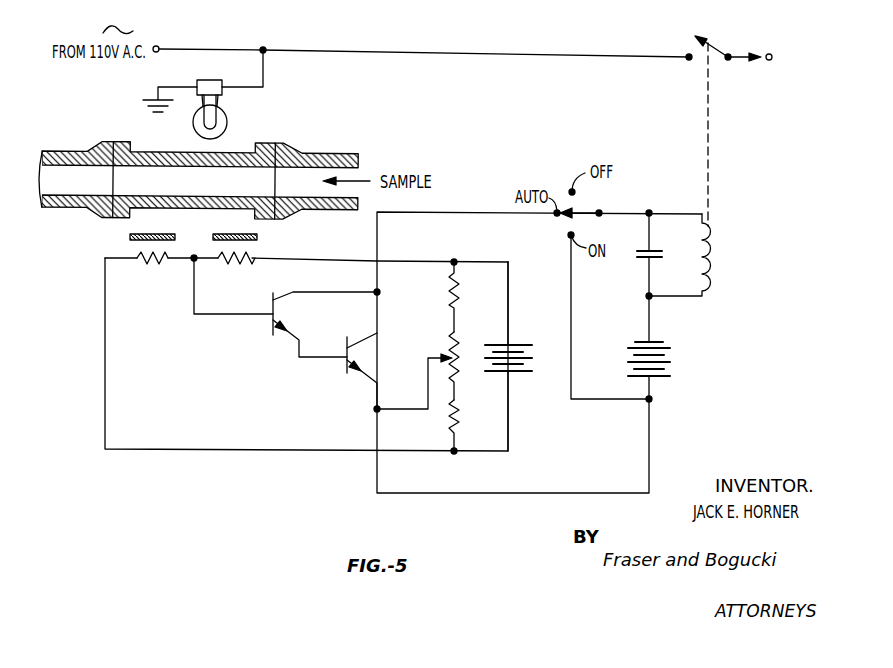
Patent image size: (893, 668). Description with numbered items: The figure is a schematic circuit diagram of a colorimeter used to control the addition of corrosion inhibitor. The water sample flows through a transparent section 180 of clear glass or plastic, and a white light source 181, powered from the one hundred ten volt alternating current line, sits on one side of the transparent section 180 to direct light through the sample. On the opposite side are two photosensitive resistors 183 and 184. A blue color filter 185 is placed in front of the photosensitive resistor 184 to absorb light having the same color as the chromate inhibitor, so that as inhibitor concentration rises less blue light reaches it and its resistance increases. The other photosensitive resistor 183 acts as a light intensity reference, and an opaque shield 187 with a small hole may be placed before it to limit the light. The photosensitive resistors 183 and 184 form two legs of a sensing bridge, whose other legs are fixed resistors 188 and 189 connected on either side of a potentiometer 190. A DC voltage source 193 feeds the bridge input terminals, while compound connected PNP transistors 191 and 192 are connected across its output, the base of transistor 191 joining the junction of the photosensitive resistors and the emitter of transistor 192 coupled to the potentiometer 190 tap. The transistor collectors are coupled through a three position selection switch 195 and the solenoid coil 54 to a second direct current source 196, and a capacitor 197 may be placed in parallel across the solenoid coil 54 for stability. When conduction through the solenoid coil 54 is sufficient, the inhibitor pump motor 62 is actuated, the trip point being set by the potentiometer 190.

The solenoid coil 54 is at (716, 250).
The inhibitor pump motor 62 is at (766, 85).
The transparent section 180 is at (243, 151).
The white light source 181 is at (224, 113).
The photosensitive resistor 183 is at (140, 266).
The photosensitive resistor 184 is at (237, 266).
The color filter 185 is at (258, 238).
The opaque shield 187 is at (130, 238).
The fixed resistor 188 is at (450, 293).
The fixed resistor 189 is at (457, 414).
The potentiometer 190 is at (450, 339).
The PNP transistor 191 is at (266, 328).
The PNP transistor 192 is at (343, 366).
The DC voltage source 193 is at (514, 342).
The three position selection switch 195 is at (590, 212).
The direct current source 196 is at (658, 342).
The capacitor 197 is at (646, 262).